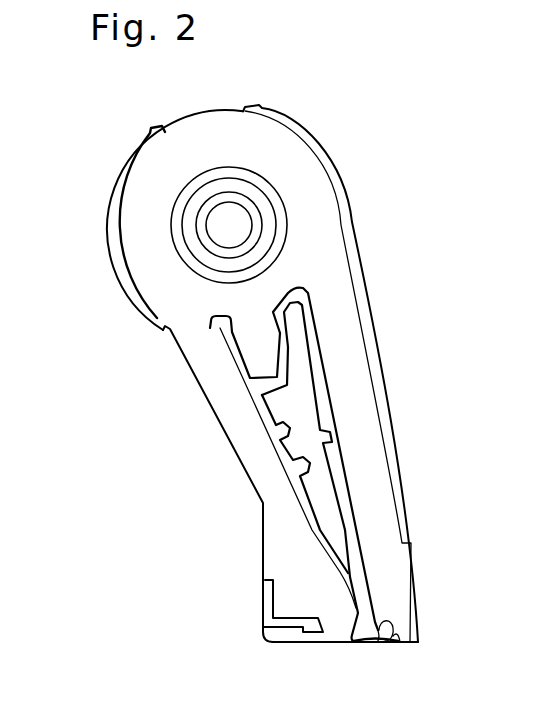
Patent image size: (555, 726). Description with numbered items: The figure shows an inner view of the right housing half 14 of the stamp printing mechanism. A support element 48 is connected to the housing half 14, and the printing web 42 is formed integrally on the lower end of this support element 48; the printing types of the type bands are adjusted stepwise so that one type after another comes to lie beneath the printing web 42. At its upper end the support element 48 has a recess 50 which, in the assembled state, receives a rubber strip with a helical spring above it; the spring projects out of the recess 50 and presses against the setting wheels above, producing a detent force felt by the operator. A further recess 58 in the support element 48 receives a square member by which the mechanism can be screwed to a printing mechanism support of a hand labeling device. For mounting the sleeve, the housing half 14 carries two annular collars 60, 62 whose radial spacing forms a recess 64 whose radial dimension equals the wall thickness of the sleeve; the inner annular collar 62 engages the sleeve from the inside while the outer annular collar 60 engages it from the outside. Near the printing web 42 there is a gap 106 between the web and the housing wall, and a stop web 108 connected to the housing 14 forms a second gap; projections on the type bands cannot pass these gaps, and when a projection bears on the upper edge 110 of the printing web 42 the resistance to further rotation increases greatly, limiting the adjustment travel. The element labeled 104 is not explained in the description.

The housing half 14 is at (355, 218).
The printing web 42 is at (357, 638).
The support element 48 is at (340, 468).
The recess 50 is at (253, 355).
The recess 58 is at (300, 448).
The outer annular collar 60 is at (250, 178).
The inner annular collar 62 is at (250, 208).
The recess 64 is at (190, 242).
The bottom wall 104 is at (335, 630).
The gap 106 is at (402, 640).
The stop web 108 is at (288, 623).
The upper edge 110 is at (385, 641).